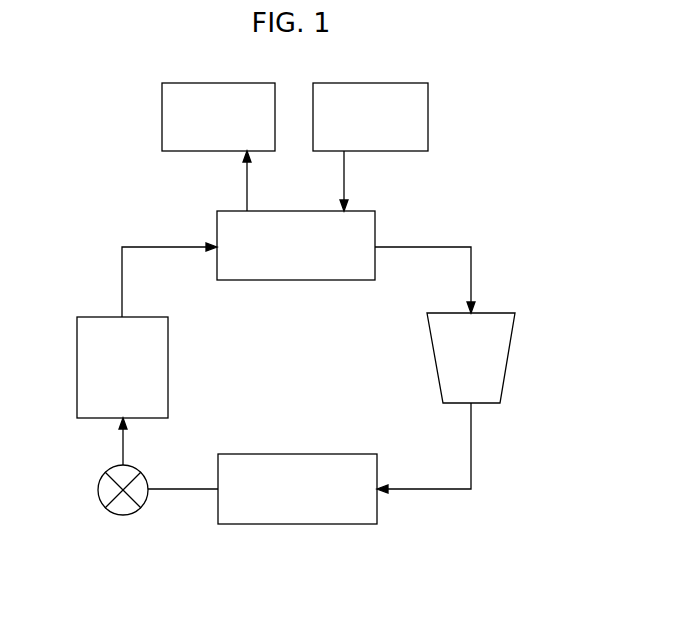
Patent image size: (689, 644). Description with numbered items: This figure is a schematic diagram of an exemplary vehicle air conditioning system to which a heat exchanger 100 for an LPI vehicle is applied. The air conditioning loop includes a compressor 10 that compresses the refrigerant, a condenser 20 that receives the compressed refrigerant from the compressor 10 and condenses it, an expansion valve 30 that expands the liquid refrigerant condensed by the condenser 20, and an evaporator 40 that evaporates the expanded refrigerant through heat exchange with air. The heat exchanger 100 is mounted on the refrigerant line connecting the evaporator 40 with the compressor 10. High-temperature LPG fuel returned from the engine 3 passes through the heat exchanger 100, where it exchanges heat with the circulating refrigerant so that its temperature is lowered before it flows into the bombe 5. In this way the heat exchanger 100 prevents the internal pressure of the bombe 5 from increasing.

The bombe 5 is at (162, 118).
The engine 3 is at (428, 118).
The heat exchanger 100 is at (392, 216).
The compressor 10 is at (508, 357).
The condenser 20 is at (298, 524).
The expansion valve 30 is at (123, 515).
The evaporator 40 is at (77, 368).